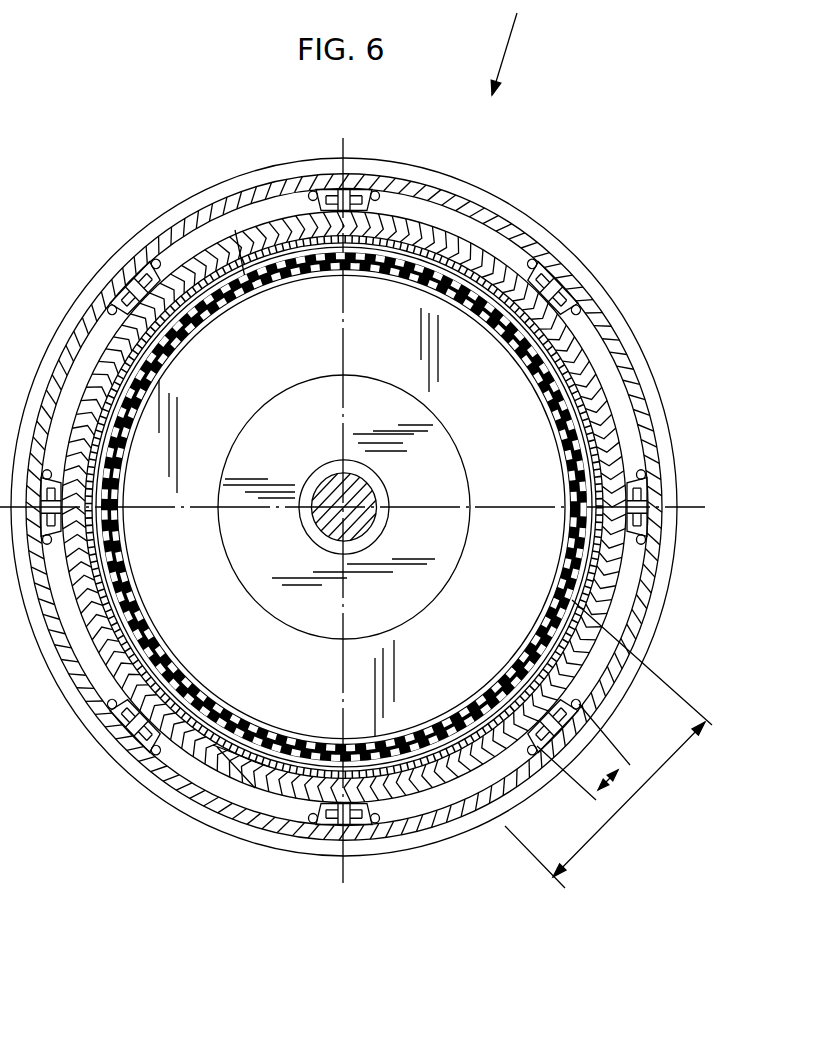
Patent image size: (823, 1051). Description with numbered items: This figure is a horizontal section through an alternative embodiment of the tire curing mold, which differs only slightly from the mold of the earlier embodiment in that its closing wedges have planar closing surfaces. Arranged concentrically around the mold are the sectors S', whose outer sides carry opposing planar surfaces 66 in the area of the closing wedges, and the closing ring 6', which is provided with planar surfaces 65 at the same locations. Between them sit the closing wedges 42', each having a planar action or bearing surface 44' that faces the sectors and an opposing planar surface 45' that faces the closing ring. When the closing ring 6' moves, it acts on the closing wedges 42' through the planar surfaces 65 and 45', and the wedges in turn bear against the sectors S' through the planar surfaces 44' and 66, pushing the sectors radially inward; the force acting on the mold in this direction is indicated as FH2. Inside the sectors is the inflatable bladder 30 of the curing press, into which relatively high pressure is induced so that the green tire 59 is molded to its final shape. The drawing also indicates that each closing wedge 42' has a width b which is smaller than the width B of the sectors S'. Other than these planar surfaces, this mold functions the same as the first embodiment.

The closing ring 6' is at (364, 503).
The planar surfaces 65 is at (603, 338).
The segments S' is at (397, 458).
The planar surface 44' is at (344, 500).
The inflatable bladder 30 is at (210, 692).
The opposing planar surfaces 66 is at (358, 193).
The closing wedges 42' is at (564, 250).
The opposing planar surface 45' is at (378, 487).
The green tire 59 is at (118, 700).
The force FH2 is at (524, 47).
The width of the sectors B is at (608, 744).
The width of the closing wedges b is at (583, 752).